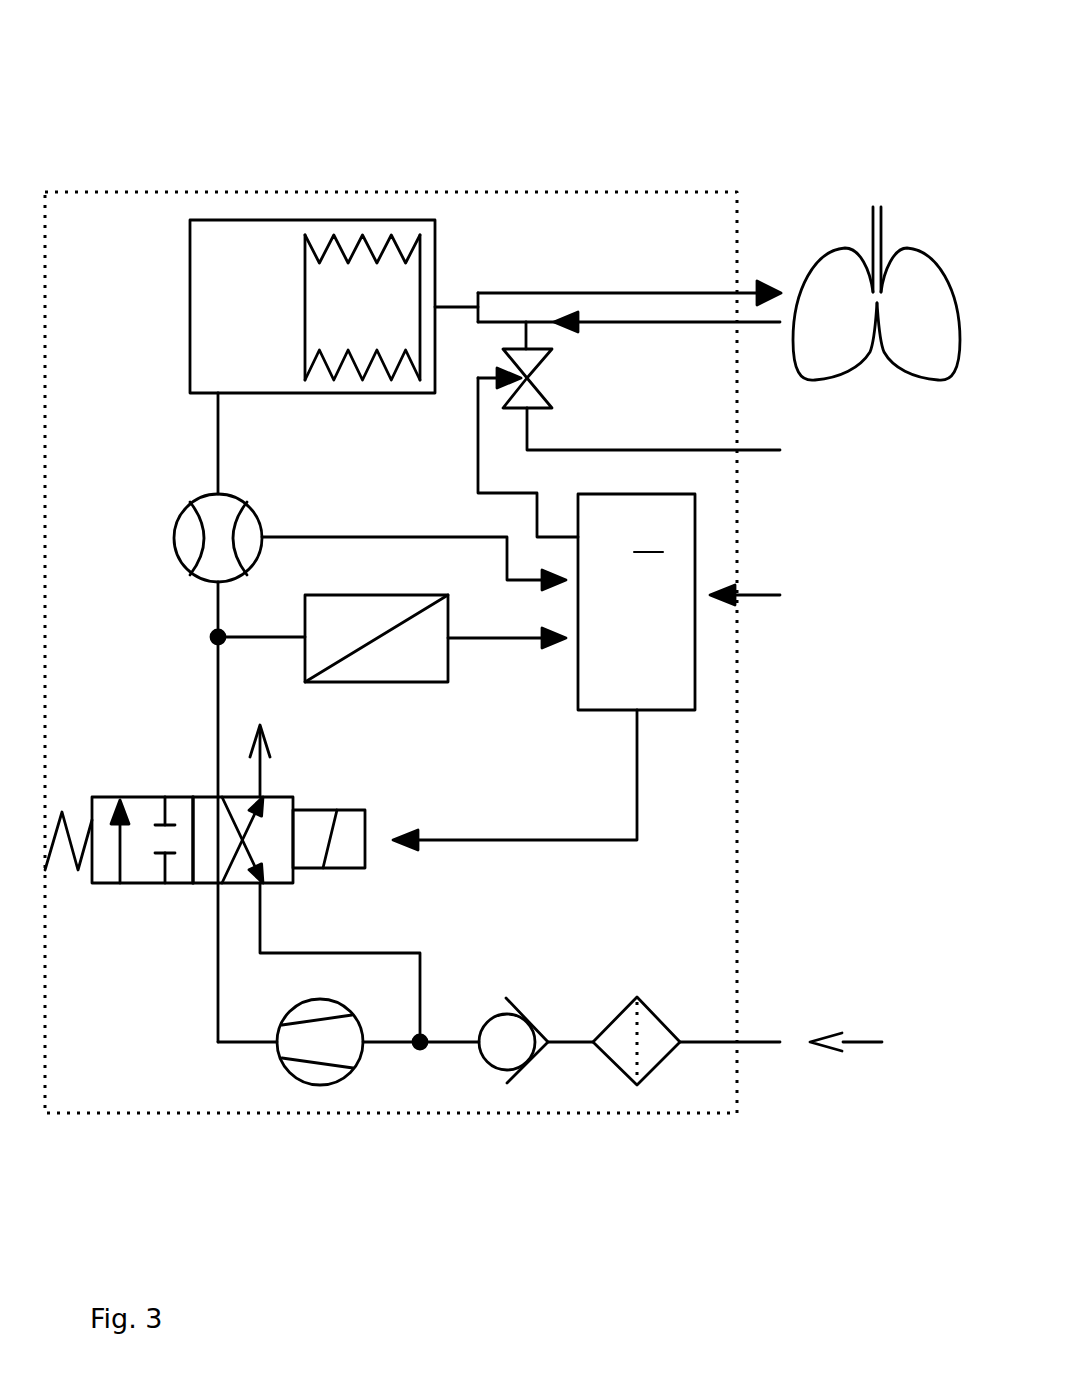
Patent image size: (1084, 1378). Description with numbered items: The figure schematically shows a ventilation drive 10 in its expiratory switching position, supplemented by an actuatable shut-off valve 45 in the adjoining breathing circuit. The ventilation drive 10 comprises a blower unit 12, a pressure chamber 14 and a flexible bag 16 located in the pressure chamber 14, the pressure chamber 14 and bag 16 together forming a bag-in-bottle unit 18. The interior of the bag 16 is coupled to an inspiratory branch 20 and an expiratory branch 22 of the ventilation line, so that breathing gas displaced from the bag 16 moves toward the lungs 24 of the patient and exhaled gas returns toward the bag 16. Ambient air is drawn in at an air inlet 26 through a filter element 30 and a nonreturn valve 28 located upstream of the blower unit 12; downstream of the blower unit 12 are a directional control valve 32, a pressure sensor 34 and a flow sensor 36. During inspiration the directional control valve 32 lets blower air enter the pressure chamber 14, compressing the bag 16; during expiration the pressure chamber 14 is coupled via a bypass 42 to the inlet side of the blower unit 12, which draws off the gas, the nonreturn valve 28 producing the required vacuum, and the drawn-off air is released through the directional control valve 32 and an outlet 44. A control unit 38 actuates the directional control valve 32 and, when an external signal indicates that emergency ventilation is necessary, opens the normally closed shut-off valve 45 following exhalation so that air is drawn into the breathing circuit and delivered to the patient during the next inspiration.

The ventilation drive 10 is at (450, 652).
The blower unit 12 is at (348, 1085).
The pressure chamber 14 is at (301, 213).
The flexible bag 16 is at (346, 199).
The bag-in-bottle unit 18 is at (314, 248).
The inspiratory branch 20 is at (629, 206).
The expiratory branch 22 is at (629, 183).
The lungs 24 is at (876, 198).
The air inlet 26 is at (817, 981).
The nonreturn valve 28 is at (494, 1089).
The filter element 30 is at (650, 1100).
The directional control valve 32 is at (205, 775).
The pressure sensor 34 is at (388, 675).
The flow sensor 36 is at (370, 505).
The control unit 38 is at (586, 672).
The bypass 42 is at (408, 962).
The outlet 44 is at (329, 752).
The shut-off valve 45 is at (601, 293).